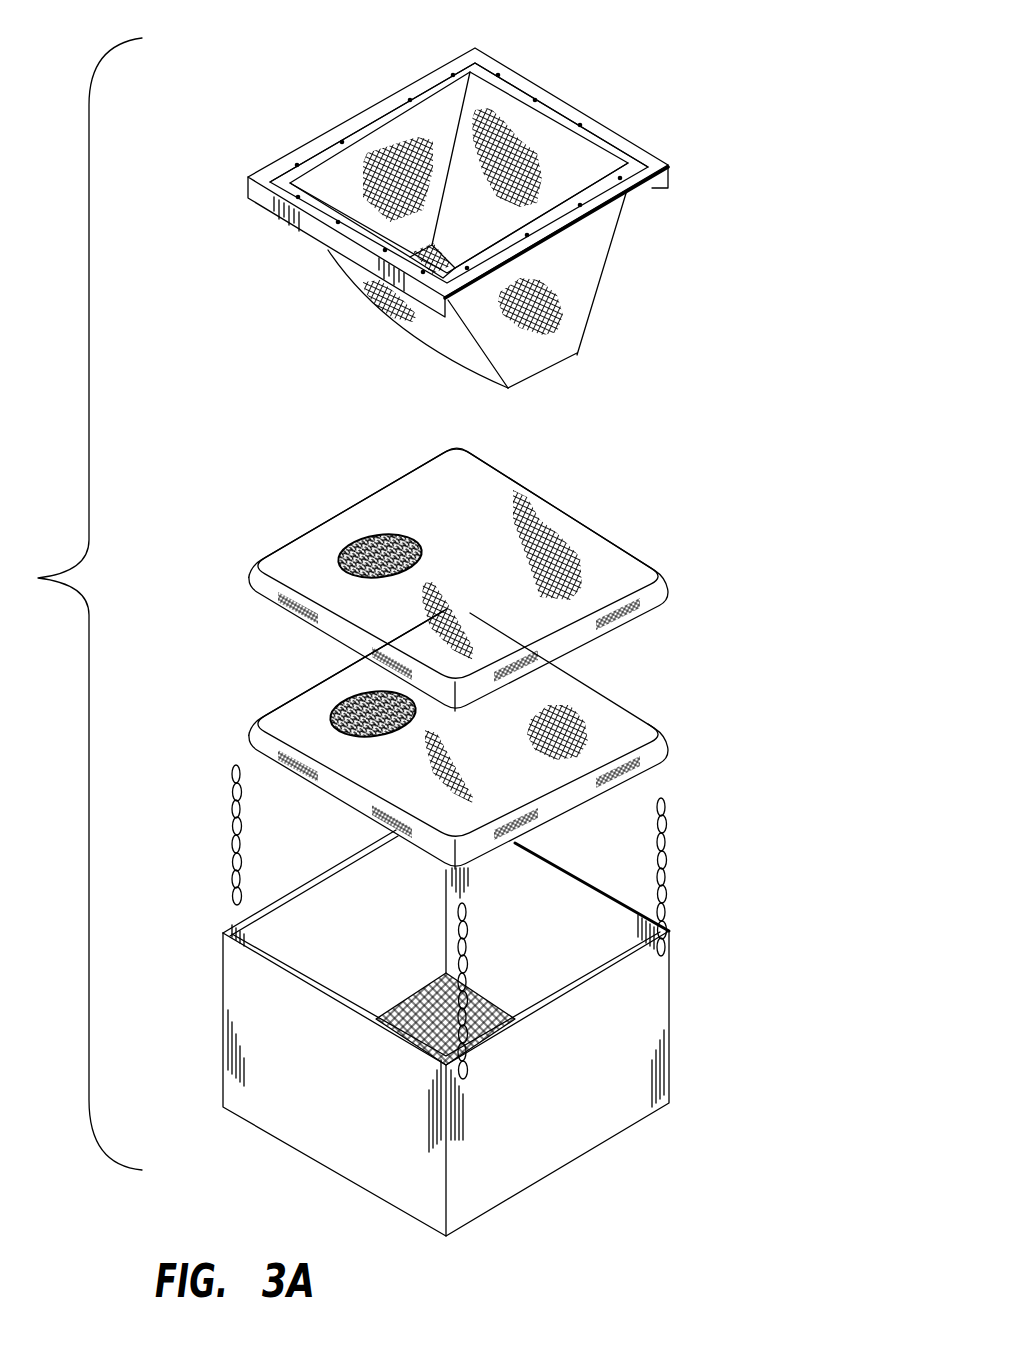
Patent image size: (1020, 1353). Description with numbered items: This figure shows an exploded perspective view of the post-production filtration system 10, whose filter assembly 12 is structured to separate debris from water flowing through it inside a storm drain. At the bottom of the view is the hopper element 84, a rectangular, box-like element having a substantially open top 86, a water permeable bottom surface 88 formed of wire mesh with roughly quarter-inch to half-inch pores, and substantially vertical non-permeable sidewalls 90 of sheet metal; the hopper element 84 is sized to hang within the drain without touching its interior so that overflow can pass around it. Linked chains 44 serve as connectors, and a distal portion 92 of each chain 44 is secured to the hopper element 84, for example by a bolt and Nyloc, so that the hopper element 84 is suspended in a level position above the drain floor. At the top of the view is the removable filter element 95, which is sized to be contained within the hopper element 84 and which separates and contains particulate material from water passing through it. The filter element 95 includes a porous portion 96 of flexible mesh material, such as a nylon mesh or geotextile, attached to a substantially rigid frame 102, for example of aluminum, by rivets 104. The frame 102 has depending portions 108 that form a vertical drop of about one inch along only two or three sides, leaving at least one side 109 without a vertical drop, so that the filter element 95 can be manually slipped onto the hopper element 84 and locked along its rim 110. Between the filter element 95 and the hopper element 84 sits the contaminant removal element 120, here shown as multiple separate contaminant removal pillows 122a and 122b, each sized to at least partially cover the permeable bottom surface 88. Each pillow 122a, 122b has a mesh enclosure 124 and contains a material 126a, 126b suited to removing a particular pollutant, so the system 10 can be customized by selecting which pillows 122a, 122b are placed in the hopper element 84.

The post-production filtration system 10 is at (752, 290).
The filter assembly 12 is at (265, 293).
The linked chain 44 is at (230, 793).
The hopper element 84 is at (678, 1046).
The open top 86 is at (525, 897).
The water permeable bottom surface 88 is at (420, 1010).
The sidewalls 90 is at (237, 1036).
The distal portion 92 is at (229, 914).
The filter element 95 is at (528, 63).
The porous portion 96 is at (590, 266).
The rigid frame 102 is at (643, 187).
The rivets 104 is at (357, 128).
The depending portions 108 is at (668, 182).
The side without vertical drop 109 is at (490, 275).
The rim 110 is at (603, 890).
The contaminant removal element 120 is at (657, 462).
The contaminant removal pillow 122a is at (505, 471).
The contaminant removal pillow 122b is at (608, 685).
The mesh enclosure 124 is at (627, 560).
The pollutant removing material 126a is at (365, 552).
The pollutant removing material 126b is at (340, 708).